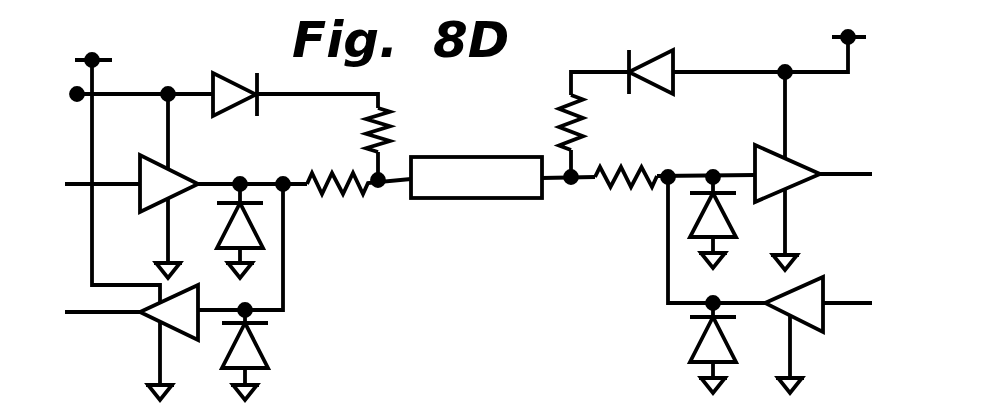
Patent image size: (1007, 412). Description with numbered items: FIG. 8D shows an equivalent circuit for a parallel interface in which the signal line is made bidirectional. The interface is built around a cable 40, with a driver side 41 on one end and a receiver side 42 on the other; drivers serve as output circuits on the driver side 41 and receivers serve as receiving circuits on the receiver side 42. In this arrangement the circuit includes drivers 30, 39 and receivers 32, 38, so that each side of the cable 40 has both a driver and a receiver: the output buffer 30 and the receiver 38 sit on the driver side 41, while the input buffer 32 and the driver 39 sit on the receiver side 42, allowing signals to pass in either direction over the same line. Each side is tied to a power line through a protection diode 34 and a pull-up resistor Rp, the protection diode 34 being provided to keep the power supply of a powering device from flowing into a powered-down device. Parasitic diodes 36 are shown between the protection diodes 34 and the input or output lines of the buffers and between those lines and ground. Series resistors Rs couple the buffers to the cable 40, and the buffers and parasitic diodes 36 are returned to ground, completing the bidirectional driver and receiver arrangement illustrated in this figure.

The output buffer 30 is at (140, 200).
The input buffer 32 is at (790, 190).
The protection diode 34 is at (241, 73).
The parasitic diode 36 is at (256, 233).
The receiver 38 is at (150, 318).
The driver 39 is at (825, 318).
The cable 40 is at (490, 157).
The driver side 41 is at (82, 146).
The receiver side 42 is at (868, 149).